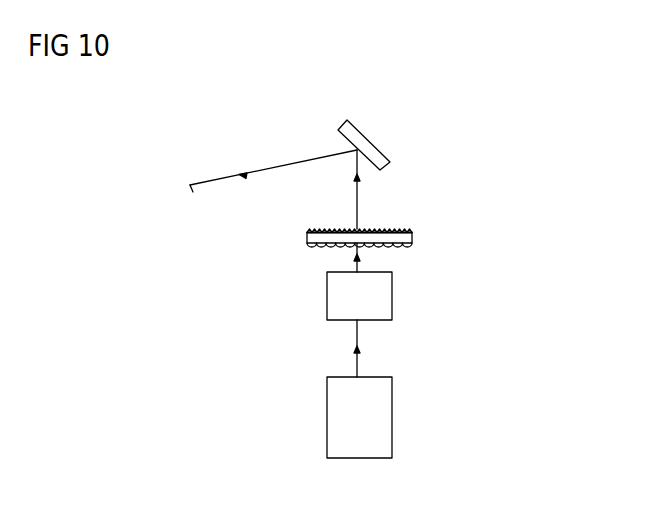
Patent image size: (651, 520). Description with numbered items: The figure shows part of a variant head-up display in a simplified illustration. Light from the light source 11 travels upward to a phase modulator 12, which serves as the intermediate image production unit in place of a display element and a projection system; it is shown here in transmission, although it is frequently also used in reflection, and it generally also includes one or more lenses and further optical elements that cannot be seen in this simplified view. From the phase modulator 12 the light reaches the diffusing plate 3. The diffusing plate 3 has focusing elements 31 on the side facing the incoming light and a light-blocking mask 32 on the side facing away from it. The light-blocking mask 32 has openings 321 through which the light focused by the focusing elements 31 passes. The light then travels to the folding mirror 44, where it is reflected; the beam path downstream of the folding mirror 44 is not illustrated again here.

The diffusing plate 3 is at (365, 235).
The light source 11 is at (338, 418).
The phase modulator 12 is at (338, 293).
The focusing elements 31 is at (398, 246).
The light-blocking mask 32 is at (395, 228).
The openings 321 is at (325, 229).
The folding mirror 44 is at (375, 147).